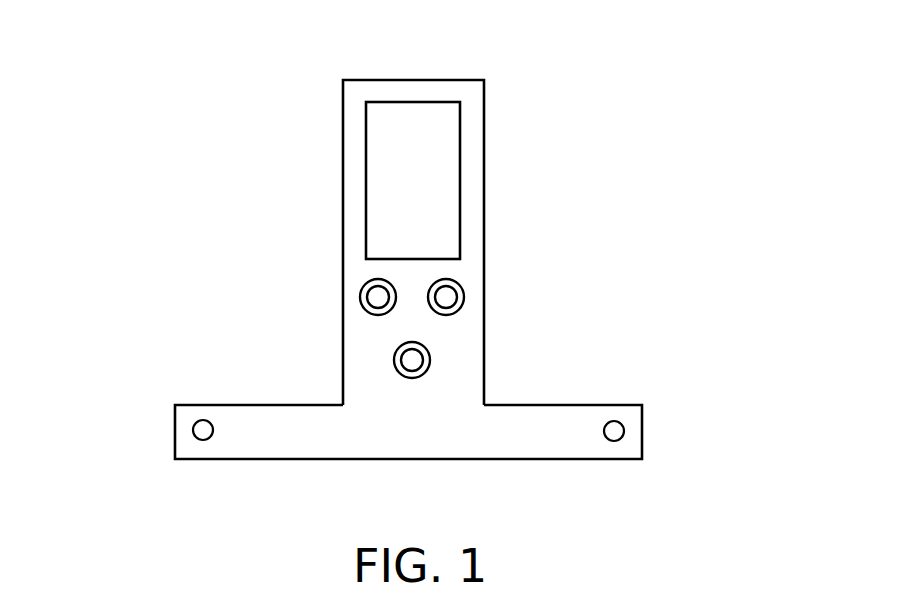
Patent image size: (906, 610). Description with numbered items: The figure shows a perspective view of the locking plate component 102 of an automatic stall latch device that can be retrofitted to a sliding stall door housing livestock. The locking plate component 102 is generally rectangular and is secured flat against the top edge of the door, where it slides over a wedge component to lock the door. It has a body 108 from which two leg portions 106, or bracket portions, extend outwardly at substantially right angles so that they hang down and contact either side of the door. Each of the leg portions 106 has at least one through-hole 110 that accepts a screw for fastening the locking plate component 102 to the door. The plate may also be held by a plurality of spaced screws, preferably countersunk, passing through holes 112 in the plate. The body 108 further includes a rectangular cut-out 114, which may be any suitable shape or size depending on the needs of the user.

The locking plate component 102 is at (406, 290).
The leg portions 106 is at (406, 450).
The body 108 is at (432, 395).
The through-hole 110 is at (203, 430).
The holes 112 is at (446, 297).
The rectangular cut-out 114 is at (422, 127).